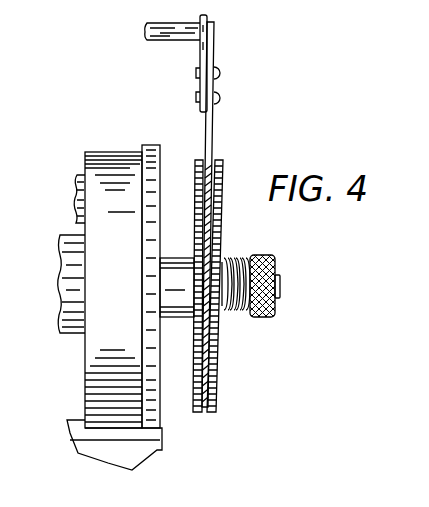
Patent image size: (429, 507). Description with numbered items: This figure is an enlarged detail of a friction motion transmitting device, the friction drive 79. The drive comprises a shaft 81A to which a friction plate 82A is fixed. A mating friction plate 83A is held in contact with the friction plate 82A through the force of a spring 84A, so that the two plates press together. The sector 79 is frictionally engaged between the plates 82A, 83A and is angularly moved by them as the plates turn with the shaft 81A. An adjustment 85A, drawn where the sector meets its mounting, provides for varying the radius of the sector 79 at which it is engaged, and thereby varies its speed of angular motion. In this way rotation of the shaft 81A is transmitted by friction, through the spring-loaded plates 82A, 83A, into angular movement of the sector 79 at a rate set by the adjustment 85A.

The sector 79 is at (213, 130).
The shaft 81A is at (180, 257).
The friction plate 82A is at (196, 404).
The mating friction plate 83A is at (216, 392).
The spring 84A is at (232, 312).
The adjustment 85A is at (220, 72).